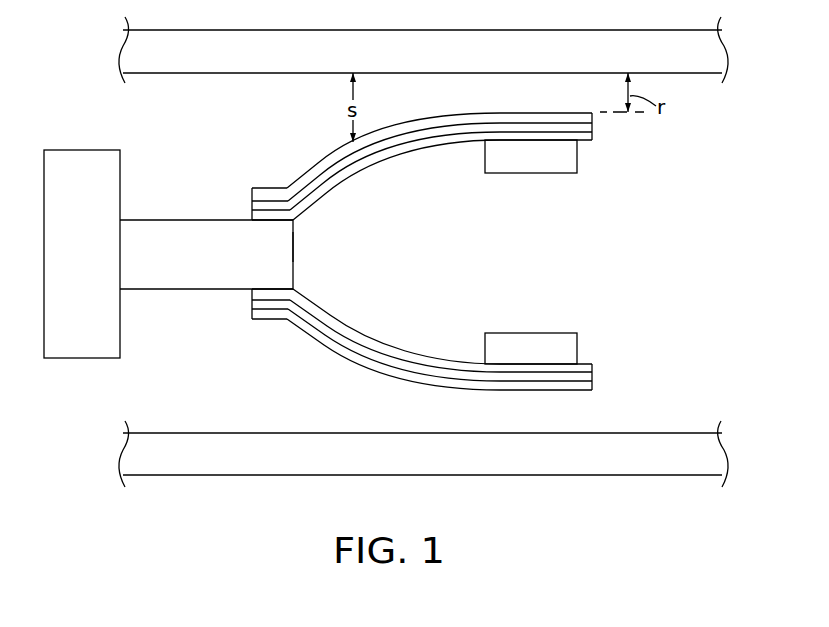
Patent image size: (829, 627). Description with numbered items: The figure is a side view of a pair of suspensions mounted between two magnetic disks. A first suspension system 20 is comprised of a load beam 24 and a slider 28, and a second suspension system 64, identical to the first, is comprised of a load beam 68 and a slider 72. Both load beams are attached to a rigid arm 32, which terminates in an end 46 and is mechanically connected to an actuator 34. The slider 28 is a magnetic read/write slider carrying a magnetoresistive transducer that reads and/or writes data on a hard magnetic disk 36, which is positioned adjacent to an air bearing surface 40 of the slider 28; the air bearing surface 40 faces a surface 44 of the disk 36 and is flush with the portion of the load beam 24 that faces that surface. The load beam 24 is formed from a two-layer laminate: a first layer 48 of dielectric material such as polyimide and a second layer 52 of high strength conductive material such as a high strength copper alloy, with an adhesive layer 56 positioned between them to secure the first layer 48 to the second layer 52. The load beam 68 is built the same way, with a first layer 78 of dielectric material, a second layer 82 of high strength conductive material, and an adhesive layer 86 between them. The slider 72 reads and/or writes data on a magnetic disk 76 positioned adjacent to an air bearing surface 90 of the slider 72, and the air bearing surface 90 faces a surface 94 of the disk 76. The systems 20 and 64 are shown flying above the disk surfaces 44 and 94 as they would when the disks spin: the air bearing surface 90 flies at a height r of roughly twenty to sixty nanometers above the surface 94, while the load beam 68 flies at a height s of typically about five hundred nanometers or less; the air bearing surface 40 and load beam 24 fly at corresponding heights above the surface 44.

The first suspension system 20 is at (435, 355).
The load beam 24 is at (340, 323).
The slider 28 is at (492, 350).
The rigid arm 32 is at (213, 266).
The actuator 34 is at (99, 266).
The hard magnetic disk 36 is at (608, 462).
The air bearing surface 40 is at (531, 392).
The surface of the disk 44 is at (235, 433).
The end of the arm 46 is at (297, 246).
The first layer 48 is at (598, 362).
The second layer 52 is at (593, 390).
The adhesive layer 56 is at (259, 304).
The second suspension system 64 is at (441, 156).
The load beam 68 is at (343, 186).
The slider 72 is at (492, 158).
The magnetic disk 76 is at (607, 40).
The first layer 78 is at (596, 142).
The second layer 82 is at (598, 116).
The adhesive layer 86 is at (259, 204).
The air bearing surface 90 is at (532, 112).
The surface of the disk 94 is at (683, 73).